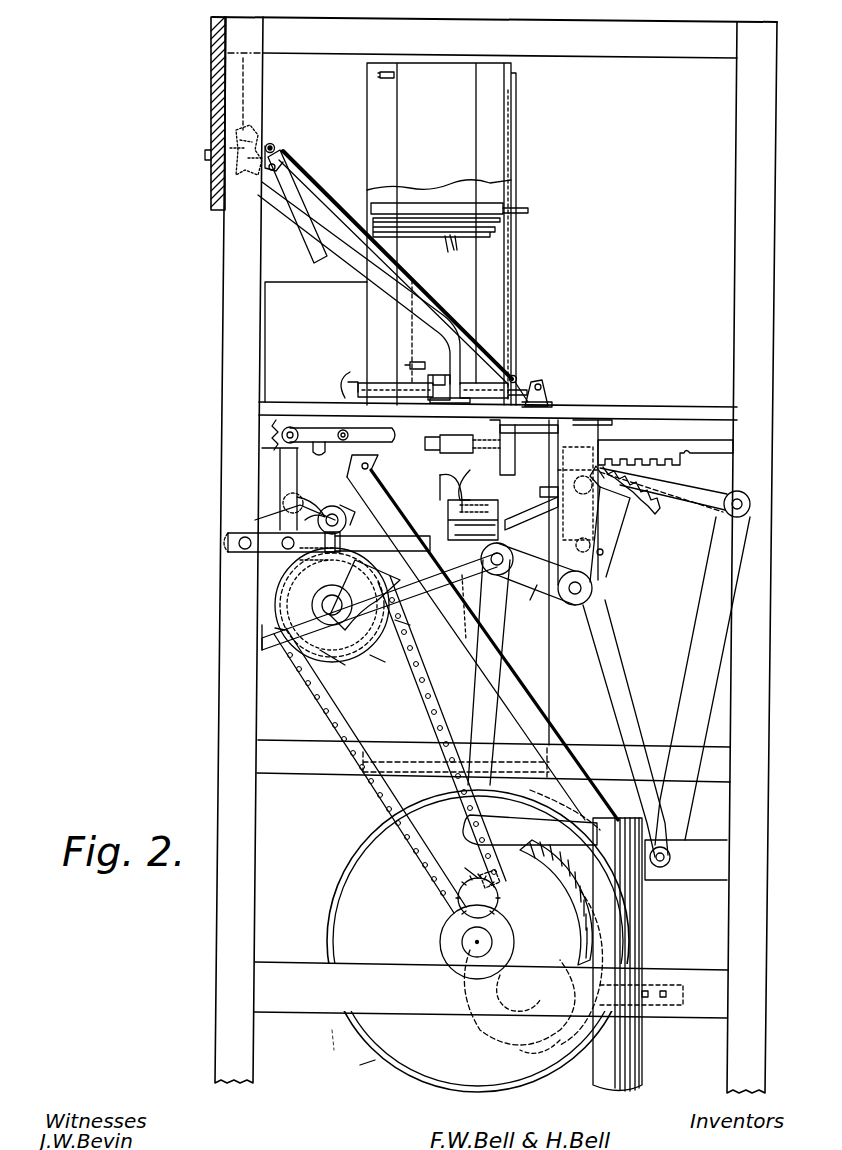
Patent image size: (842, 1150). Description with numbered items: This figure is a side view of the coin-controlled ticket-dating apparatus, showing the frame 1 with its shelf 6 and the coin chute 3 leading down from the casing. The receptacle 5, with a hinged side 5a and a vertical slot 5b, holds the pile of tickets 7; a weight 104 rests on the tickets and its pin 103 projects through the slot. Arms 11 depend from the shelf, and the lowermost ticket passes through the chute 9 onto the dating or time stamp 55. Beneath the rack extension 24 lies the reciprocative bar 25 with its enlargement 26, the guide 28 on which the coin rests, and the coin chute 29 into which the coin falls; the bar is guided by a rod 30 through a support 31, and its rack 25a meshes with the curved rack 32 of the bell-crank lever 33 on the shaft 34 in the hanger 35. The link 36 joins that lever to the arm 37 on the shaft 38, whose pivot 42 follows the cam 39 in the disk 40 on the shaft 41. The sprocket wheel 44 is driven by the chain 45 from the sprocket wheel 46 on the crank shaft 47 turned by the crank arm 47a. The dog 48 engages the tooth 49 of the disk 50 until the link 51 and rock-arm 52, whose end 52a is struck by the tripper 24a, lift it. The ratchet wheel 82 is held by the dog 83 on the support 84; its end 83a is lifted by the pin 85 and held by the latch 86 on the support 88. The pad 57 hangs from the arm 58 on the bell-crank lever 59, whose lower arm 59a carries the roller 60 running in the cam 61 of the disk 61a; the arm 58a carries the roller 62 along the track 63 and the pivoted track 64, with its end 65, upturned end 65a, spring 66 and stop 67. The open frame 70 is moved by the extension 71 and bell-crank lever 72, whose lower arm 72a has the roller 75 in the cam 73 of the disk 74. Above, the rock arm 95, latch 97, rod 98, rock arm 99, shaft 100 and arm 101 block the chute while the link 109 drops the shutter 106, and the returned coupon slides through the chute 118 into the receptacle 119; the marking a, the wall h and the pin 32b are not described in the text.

The frame 1 is at (225, 550).
The wall h is at (205, 209).
The shelf 6 is at (699, 408).
The link 109 is at (232, 97).
The drop-shutter 106 is at (262, 82).
The rock arm or bell-crank 95 is at (255, 134).
The latch 97 is at (278, 146).
The rod 98 is at (320, 186).
The coin chute 3 is at (337, 237).
The chute 118 is at (304, 236).
The receptacle 119 is at (316, 342).
The receptacle or column 5 is at (510, 130).
The movable or hinged side 5a is at (394, 165).
The vertical slot 5b is at (516, 185).
The weight 104 is at (433, 207).
The pin 103 is at (530, 207).
The tickets 7 is at (451, 252).
The extension 24 is at (395, 384).
The line a is at (396, 331).
The upturned free end 52a is at (358, 385).
The arm 101 is at (522, 376).
The shaft 100 is at (545, 380).
The rock arm 99 is at (548, 392).
The reciprocative bar 25 is at (548, 442).
The hanger 35 is at (598, 418).
The rack 25a is at (690, 456).
The tripper 24a is at (500, 428).
The enlargement 26 is at (462, 444).
The roller 62 is at (578, 502).
The guide or chute 9 is at (506, 478).
The arm 58 is at (685, 498).
The arm 58a is at (705, 510).
The curved rack 32 is at (628, 512).
The bell-crank lever 33 is at (603, 553).
The rod or shaft 34 is at (573, 600).
The end of pivoted track 65 is at (528, 574).
The extension 71 is at (531, 600).
The bell-crank lever 59 is at (700, 627).
The bell-crank lever 72 is at (616, 722).
The chute 29 is at (482, 637).
The guide 28 is at (381, 478).
The link 36 is at (508, 657).
The dating or time stamp 55 is at (448, 618).
The track or way 63 is at (497, 548).
The pivoted track or way 64 is at (480, 485).
The stop 67 is at (575, 524).
The pad or hammer 57 is at (542, 490).
The upturned forward end 65a is at (435, 491).
The spring 66 is at (412, 525).
The open frame 70 is at (382, 546).
The rock-arm 52 is at (293, 427).
The arms 11 is at (316, 427).
The extension or rod 30 is at (297, 448).
The pin 32b is at (341, 452).
The support 31 is at (282, 463).
The link 51 is at (283, 465).
The support 88 is at (260, 520).
The dog 48 is at (268, 520).
The latch 86 is at (327, 508).
The end of dog 83a is at (353, 507).
The dog 83 is at (301, 559).
The support 84 is at (340, 565).
The crank shaft 47 is at (336, 604).
The crank arm 47a is at (387, 595).
The ratchet wheel 82 is at (413, 627).
The notch or tooth 49 is at (318, 585).
The sprocket wheel 46 is at (300, 648).
The projection or pin 85 is at (320, 660).
The disk 50 is at (372, 660).
The chain 45 is at (340, 796).
The pivot 42 is at (460, 836).
The roller 60 is at (508, 790).
The arm 37 is at (530, 890).
The roller 75 is at (462, 868).
The lower arm 72a is at (477, 872).
The sprocket wheel 44 is at (458, 890).
The disk 40 is at (478, 941).
The shaft 41 is at (470, 950).
The cam 61 is at (467, 1020).
The disk 74 is at (362, 1048).
The disk 61a is at (388, 1062).
The cam 73 is at (530, 1062).
The lower arm 59a is at (582, 818).
The rod or shaft 38 is at (672, 857).
The cam 39 is at (642, 910).